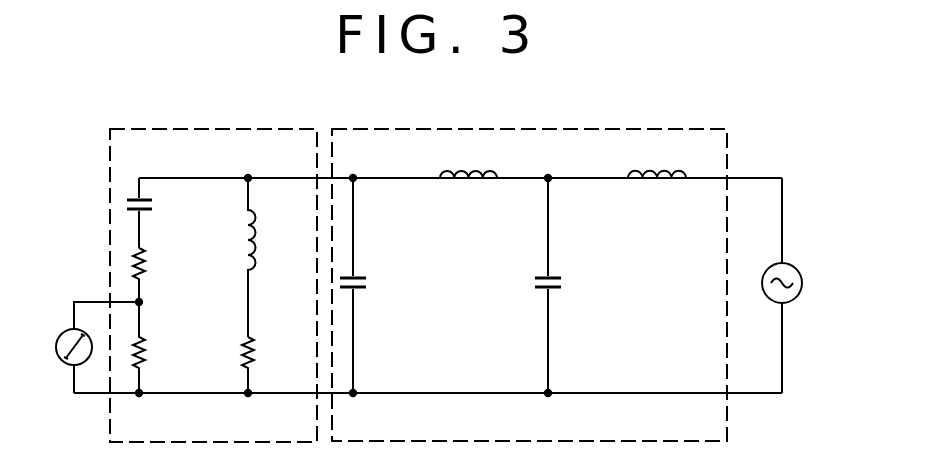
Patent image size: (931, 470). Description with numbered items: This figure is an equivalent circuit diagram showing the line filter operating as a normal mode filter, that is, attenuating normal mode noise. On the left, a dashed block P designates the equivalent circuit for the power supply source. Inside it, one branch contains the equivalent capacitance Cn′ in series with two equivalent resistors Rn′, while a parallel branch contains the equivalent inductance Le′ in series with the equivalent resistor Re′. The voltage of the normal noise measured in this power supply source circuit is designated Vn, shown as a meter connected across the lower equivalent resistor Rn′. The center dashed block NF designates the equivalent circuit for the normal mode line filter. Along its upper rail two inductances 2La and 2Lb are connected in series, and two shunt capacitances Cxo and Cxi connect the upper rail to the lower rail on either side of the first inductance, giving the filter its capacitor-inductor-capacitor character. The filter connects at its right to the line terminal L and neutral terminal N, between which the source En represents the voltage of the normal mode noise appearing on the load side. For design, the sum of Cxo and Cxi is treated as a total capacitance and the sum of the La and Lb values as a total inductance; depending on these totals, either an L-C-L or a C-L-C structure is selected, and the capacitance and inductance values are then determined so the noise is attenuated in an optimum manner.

The equivalent circuit for a power supply source P is at (193, 129).
The equivalent circuit for the normal mode line filter NF is at (452, 128).
The line terminal L is at (763, 177).
The neutral terminal N is at (738, 394).
The voltage of the normal noise voltage Vn is at (87, 345).
The equivalent capacitance Cn′ is at (201, 190).
The equivalent resistor Rn′ is at (199, 255).
The equivalent inductance Le′ is at (296, 233).
The equivalent resistor Re′ is at (299, 338).
The capacitance Cx0 Cxo is at (380, 286).
The capacitance Cx1 Cxi is at (570, 286).
The inductance La 2La is at (468, 156).
The inductance Lb 2Lb is at (656, 156).
The voltage of the normal mode noise appearing on the load side En is at (801, 285).